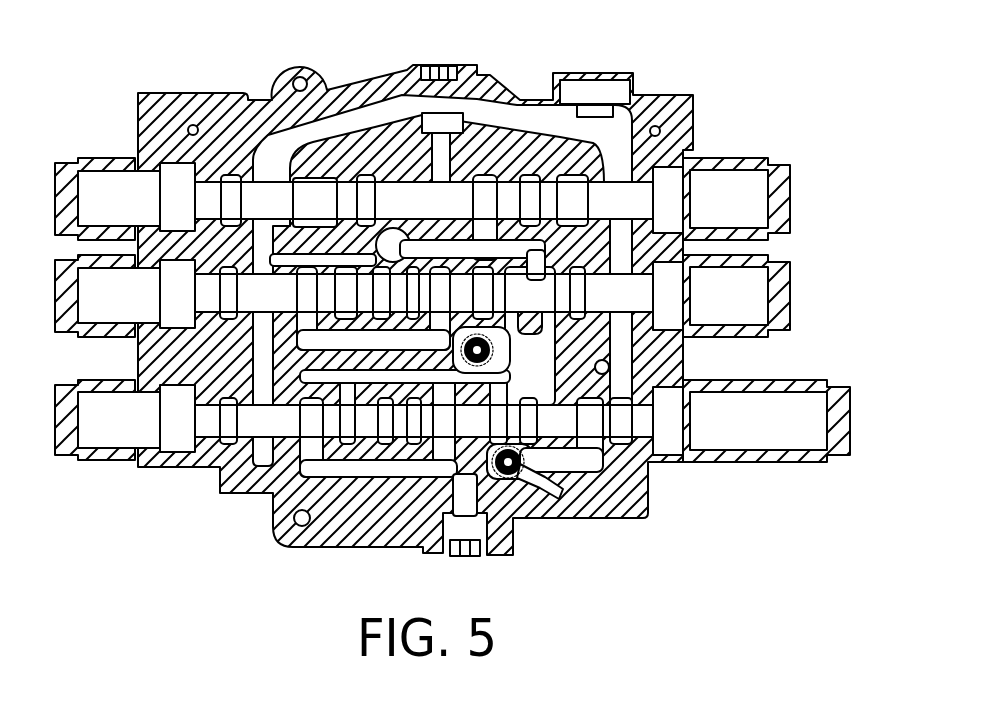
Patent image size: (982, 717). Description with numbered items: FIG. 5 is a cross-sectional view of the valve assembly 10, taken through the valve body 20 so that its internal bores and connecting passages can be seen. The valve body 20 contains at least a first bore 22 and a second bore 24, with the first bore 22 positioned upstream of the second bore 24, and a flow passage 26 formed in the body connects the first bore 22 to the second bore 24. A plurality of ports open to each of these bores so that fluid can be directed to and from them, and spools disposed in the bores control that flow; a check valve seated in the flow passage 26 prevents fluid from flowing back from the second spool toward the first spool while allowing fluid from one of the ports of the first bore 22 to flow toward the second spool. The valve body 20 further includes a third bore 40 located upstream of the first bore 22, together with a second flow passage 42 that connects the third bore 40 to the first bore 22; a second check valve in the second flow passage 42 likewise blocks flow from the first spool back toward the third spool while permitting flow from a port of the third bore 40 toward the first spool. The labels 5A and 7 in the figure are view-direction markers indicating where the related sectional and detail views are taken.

The valve assembly 10 is at (745, 77).
The valve body 20 is at (232, 94).
The first bore 22 is at (640, 292).
The second bore 24 is at (645, 197).
The flow passage 26 is at (347, 256).
The third bore 40 is at (597, 425).
The second flow passage 42 is at (513, 372).
The view direction arrow 7 is at (382, 212).
The section line 5A is at (514, 585).